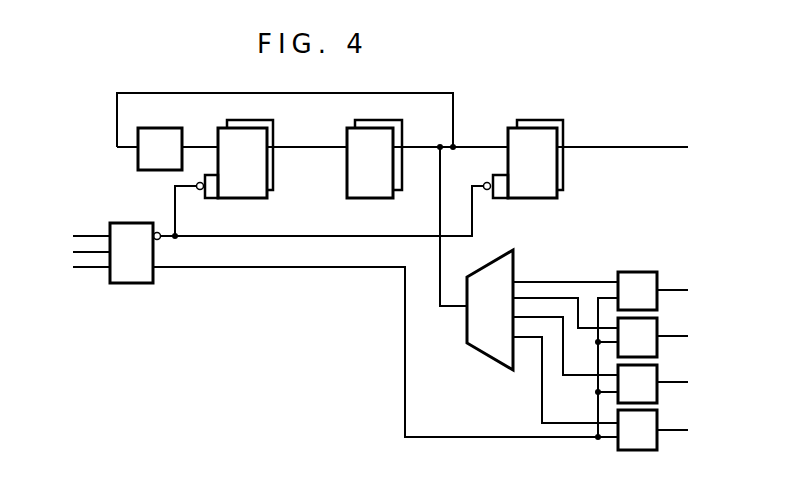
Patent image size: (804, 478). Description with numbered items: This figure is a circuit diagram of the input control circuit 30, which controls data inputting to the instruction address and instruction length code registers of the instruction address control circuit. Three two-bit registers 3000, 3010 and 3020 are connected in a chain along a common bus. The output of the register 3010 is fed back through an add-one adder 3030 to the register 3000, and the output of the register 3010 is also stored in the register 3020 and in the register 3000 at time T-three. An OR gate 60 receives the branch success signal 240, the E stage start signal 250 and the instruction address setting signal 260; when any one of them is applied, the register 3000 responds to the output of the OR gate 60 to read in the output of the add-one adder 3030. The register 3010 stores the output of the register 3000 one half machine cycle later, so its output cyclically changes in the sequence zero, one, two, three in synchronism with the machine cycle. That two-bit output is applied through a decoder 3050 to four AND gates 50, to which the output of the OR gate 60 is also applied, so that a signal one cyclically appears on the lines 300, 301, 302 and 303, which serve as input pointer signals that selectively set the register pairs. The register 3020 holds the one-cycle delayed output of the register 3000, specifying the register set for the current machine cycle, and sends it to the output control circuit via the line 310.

The input control circuit 30 is at (329, 306).
The add-one adder 3030 is at (150, 108).
The 2-bit register 3000 is at (250, 198).
The 2-bit register 3010 is at (365, 198).
The 2-bit register 3020 is at (535, 198).
The line 310 is at (632, 147).
The OR gate 60 is at (140, 283).
The branch success signal 240 is at (69, 235).
The E stage start signal 250 is at (69, 253).
The instruction address setting signal 260 is at (69, 272).
The decoder 3050 is at (517, 262).
The AND gates 50 is at (640, 272).
The line 300 is at (695, 290).
The line 301 is at (695, 337).
The line 302 is at (695, 385).
The line 303 is at (695, 432).